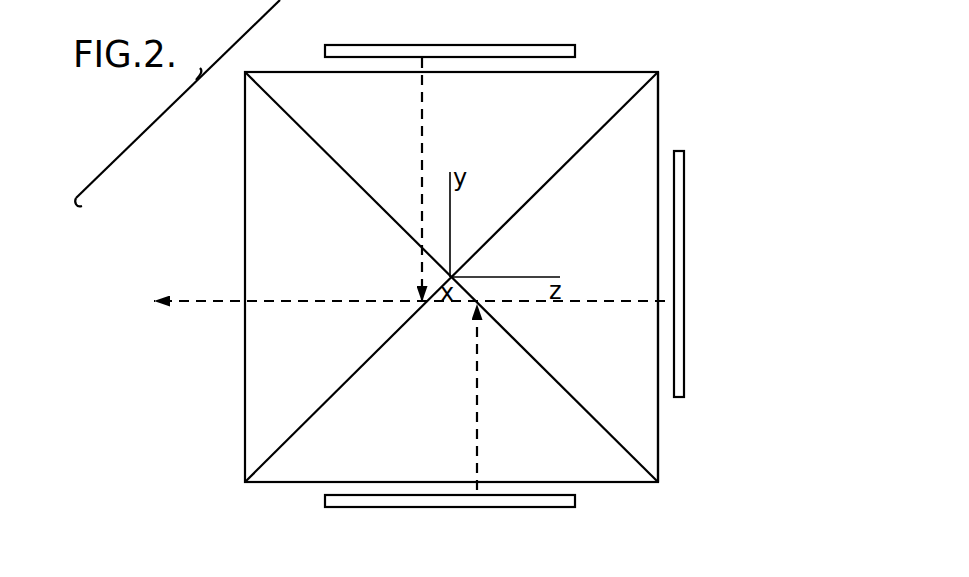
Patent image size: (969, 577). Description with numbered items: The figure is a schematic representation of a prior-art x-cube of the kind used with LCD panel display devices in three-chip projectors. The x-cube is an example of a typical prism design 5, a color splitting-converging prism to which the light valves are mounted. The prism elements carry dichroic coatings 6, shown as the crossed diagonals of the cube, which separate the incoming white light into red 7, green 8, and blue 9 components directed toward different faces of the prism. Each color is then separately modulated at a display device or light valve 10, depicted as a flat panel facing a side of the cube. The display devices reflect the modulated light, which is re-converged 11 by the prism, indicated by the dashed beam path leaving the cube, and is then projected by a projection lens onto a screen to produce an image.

The prism design 5 is at (731, 79).
The dichroic coatings 6 is at (326, 163).
The red 7 is at (618, 66).
The green 8 is at (661, 125).
The blue 9 is at (613, 466).
The light valve 10 is at (687, 352).
The re-converged light 11 is at (211, 309).